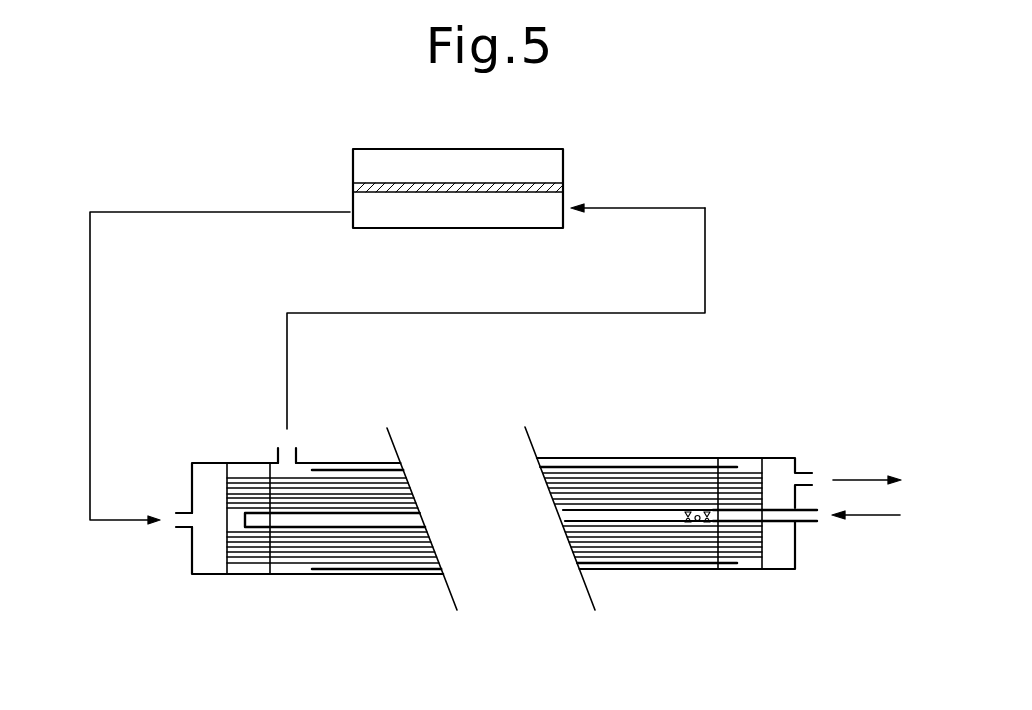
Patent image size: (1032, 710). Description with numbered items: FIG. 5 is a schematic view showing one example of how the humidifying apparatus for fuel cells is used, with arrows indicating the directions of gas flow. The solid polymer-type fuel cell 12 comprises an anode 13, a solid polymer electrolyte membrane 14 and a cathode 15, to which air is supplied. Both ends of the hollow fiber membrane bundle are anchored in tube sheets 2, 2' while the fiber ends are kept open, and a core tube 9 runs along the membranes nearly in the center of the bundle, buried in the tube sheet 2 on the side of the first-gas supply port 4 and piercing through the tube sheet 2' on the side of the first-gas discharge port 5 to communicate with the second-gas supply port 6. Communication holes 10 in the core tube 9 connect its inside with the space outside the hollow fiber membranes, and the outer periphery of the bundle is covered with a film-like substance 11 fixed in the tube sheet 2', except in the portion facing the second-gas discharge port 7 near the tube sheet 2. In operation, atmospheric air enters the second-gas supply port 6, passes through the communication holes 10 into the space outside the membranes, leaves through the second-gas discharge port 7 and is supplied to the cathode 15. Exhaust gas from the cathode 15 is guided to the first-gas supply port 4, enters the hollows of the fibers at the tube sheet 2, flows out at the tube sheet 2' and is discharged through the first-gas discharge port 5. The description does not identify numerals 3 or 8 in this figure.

The tube sheet 2 is at (324, 494).
The tube sheet 2' is at (763, 473).
The hollow fiber membranes 3 is at (334, 519).
The first-gas supply port 4 is at (178, 520).
The first-gas discharge port 5 is at (810, 478).
The second-gas supply port 6 is at (818, 516).
The second-gas discharge port 7 is at (288, 450).
The hollow fibers 8 is at (592, 461).
The core tube 9 is at (648, 516).
The communication holes 10 is at (700, 521).
The film-like substance 11 is at (637, 461).
The solid polymer-type fuel cell 12 is at (463, 167).
The anode 13 is at (385, 161).
The solid polymer electrolyte membrane 14 is at (362, 182).
The cathode 15 is at (366, 207).